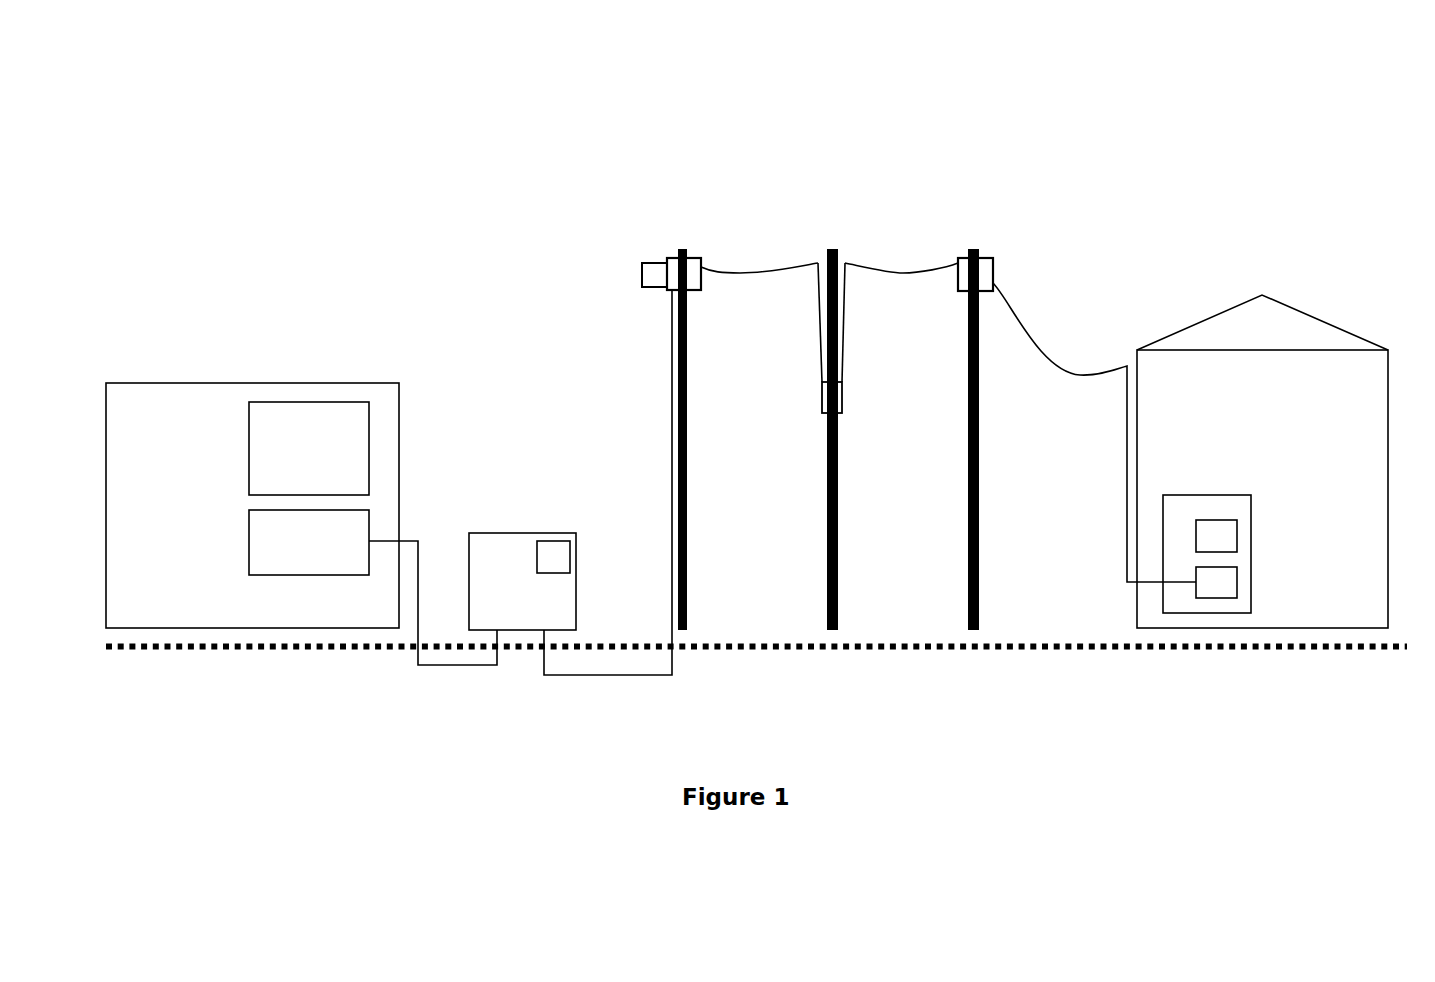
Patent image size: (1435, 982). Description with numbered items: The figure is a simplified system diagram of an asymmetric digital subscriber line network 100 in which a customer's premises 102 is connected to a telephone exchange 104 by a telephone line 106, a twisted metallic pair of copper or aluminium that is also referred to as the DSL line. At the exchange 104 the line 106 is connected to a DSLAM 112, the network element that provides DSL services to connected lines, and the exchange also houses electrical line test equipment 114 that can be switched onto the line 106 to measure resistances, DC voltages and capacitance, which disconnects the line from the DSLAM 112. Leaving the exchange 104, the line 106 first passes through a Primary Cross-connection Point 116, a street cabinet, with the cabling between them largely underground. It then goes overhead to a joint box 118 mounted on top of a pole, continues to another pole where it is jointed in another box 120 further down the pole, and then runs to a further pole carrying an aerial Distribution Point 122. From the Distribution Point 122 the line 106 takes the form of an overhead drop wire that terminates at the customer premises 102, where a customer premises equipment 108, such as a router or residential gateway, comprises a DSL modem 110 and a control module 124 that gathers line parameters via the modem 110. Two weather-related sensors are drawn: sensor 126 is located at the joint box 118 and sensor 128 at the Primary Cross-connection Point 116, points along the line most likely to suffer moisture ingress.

The ADSL network 100 is at (756, 362).
The customer premises 102 is at (1262, 290).
The telephone exchange 104 is at (158, 376).
The telephone line 106 is at (665, 453).
The customer premises equipment 108 is at (1253, 527).
The DSL modem 110 is at (1238, 568).
The DSLAM 112 is at (249, 510).
The electrical line test equipment 114 is at (255, 402).
The primary cross-connection point 116 is at (480, 522).
The joint box 118 is at (671, 245).
The joint box 120 is at (815, 383).
The aerial distribution point 122 is at (962, 243).
The control module 124 is at (1217, 513).
The sensor 126 is at (640, 265).
The sensor 128 is at (557, 533).